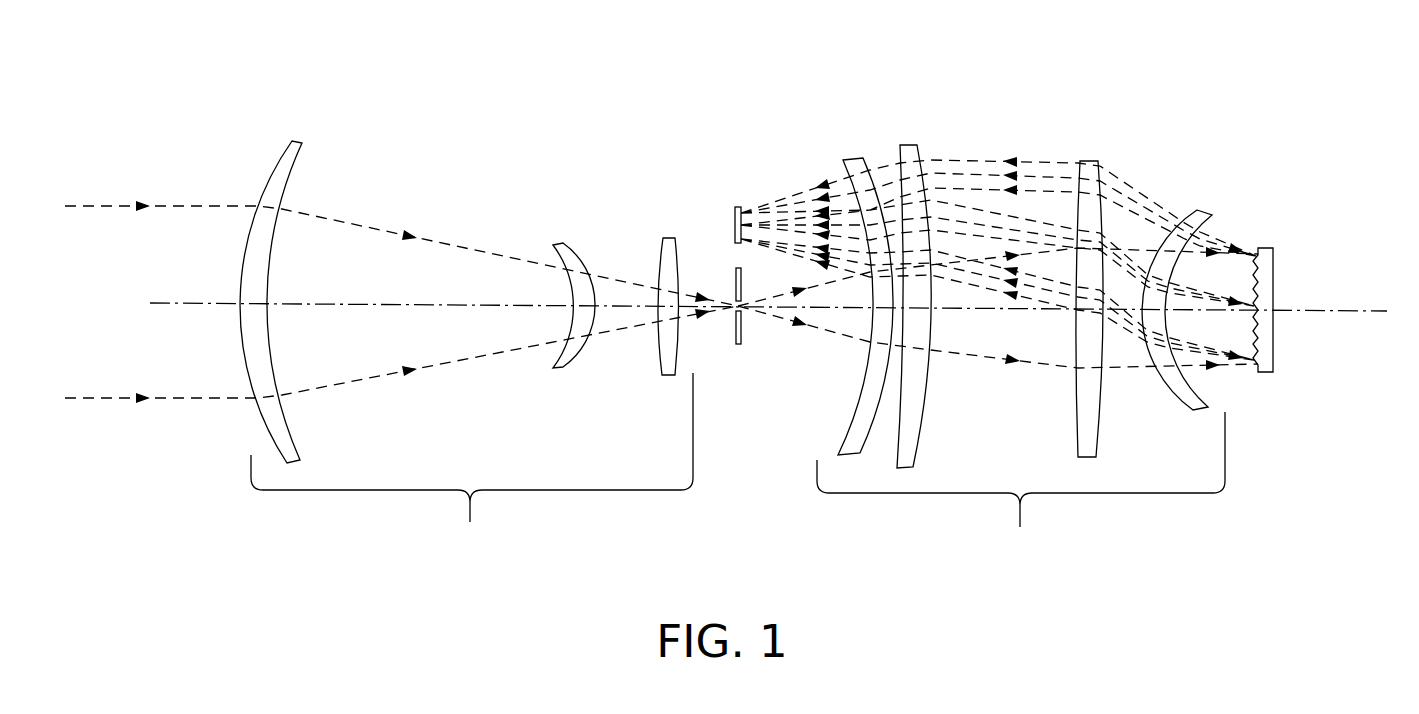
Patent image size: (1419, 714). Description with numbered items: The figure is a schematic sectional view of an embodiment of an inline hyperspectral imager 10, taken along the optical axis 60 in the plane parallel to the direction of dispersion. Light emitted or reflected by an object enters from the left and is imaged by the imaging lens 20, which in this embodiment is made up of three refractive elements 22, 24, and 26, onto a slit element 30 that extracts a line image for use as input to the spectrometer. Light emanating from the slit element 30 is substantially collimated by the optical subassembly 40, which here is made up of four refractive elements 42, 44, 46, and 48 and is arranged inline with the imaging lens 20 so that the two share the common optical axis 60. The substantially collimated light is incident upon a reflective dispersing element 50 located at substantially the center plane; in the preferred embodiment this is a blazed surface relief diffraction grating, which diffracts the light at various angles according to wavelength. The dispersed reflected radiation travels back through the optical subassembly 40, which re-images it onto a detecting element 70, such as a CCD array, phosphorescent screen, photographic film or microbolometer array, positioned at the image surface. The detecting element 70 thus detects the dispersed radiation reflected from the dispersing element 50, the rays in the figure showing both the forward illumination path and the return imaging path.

The inline hyperspectral imager 10 is at (400, 86).
The imaging lens 20 is at (458, 345).
The refractive element 22 is at (272, 186).
The refractive element 24 is at (568, 255).
The refractive element 26 is at (667, 265).
The slit element 30 is at (742, 334).
The optical subassembly 40 is at (1015, 322).
The refractive element 42 is at (855, 158).
The refractive element 44 is at (902, 145).
The refractive element 46 is at (1088, 162).
The refractive element 48 is at (1203, 218).
The dispersing element 50 is at (1268, 277).
The optical axis 60 is at (185, 302).
The detecting element 70 is at (735, 223).